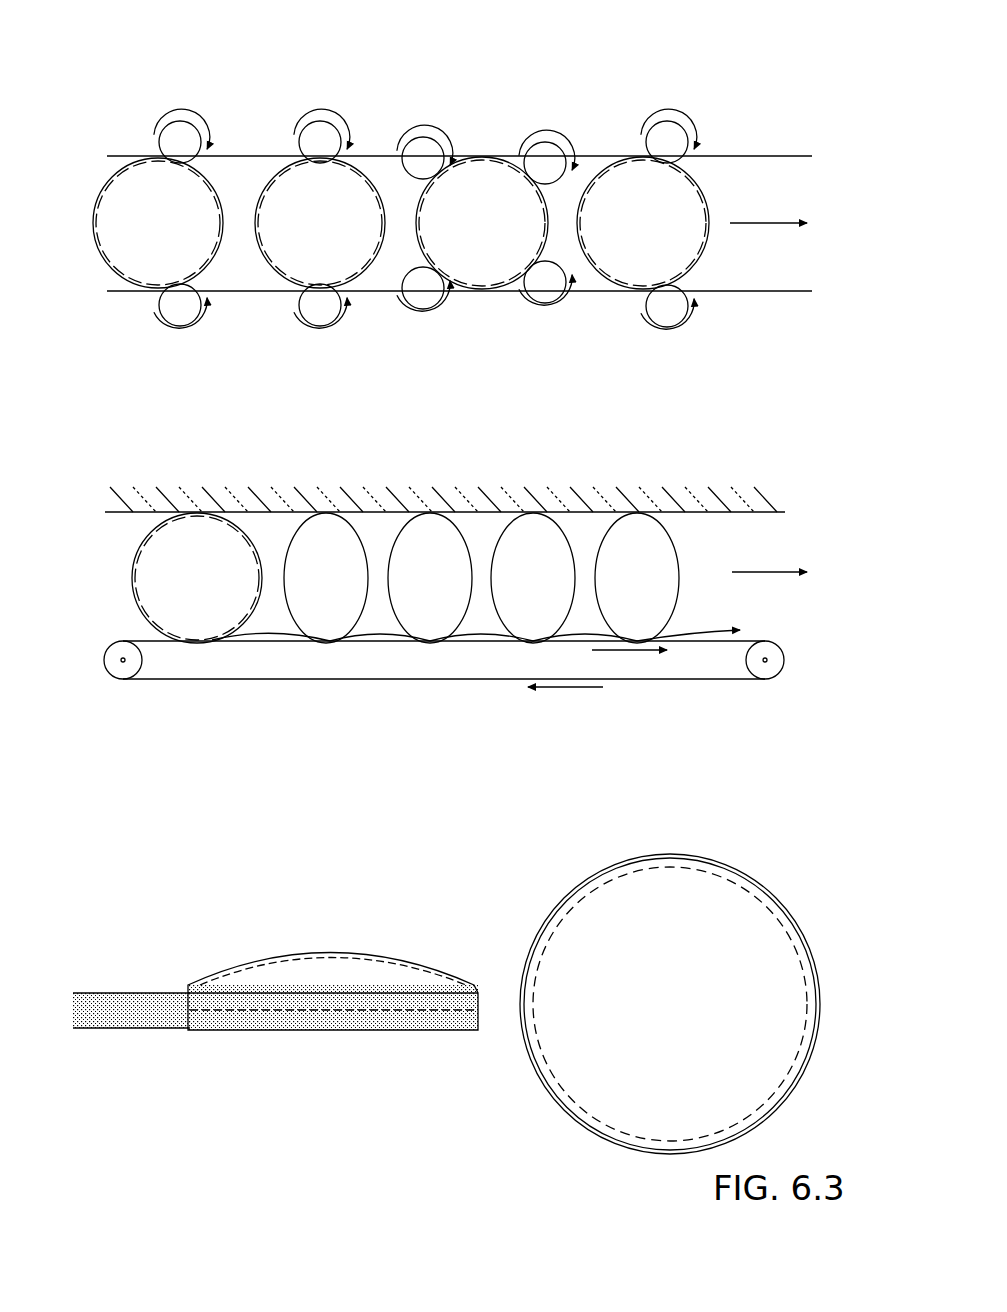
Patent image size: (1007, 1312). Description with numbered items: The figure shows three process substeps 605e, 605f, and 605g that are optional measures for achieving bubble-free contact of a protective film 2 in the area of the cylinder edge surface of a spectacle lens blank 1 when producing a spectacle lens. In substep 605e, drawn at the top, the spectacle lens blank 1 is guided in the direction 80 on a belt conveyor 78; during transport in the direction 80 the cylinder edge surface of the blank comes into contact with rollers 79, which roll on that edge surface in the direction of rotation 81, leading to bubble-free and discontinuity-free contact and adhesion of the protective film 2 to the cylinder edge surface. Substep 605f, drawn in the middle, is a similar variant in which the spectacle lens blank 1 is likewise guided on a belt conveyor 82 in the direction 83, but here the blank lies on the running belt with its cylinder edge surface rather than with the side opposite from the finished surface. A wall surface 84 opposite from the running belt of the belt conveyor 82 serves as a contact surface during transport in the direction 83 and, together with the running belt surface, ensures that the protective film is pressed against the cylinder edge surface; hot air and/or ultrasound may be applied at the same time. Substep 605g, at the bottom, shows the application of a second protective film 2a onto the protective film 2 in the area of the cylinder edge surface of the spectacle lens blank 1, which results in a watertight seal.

The process substep 605e is at (150, 92).
The process substep 605f is at (192, 496).
The process substep 605g is at (152, 910).
The spectacle lens blank 1 is at (134, 180).
The belt conveyor 78 is at (244, 174).
The rollers 79 is at (300, 130).
The direction of rotation 81 is at (306, 118).
The direction 80 is at (760, 222).
The wall surface 84 is at (637, 511).
The direction 83 is at (760, 571).
The belt conveyor 82 is at (370, 680).
The protective film 2 is at (424, 956).
The second protective film 2a is at (118, 995).